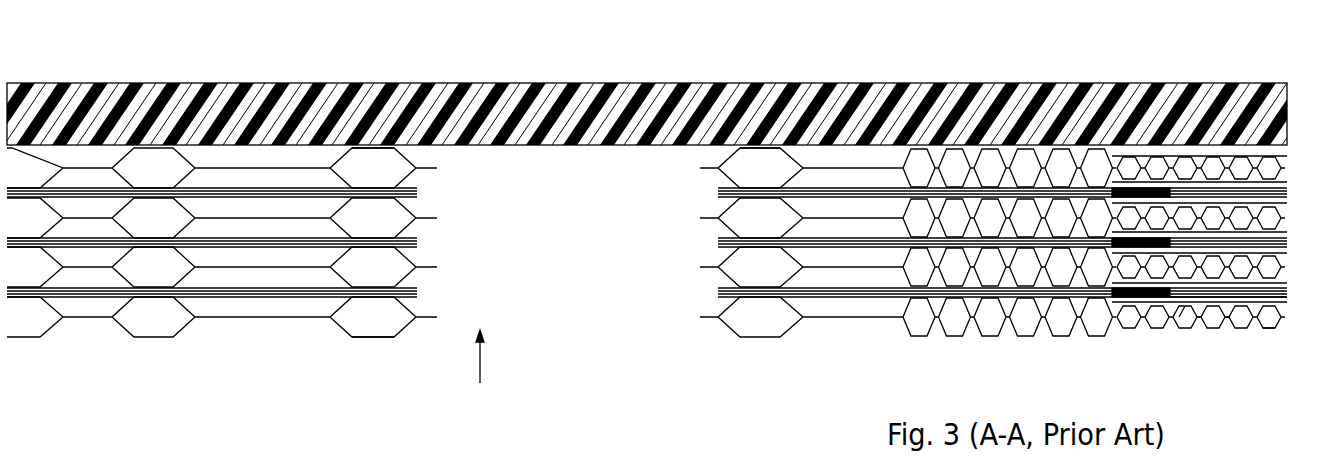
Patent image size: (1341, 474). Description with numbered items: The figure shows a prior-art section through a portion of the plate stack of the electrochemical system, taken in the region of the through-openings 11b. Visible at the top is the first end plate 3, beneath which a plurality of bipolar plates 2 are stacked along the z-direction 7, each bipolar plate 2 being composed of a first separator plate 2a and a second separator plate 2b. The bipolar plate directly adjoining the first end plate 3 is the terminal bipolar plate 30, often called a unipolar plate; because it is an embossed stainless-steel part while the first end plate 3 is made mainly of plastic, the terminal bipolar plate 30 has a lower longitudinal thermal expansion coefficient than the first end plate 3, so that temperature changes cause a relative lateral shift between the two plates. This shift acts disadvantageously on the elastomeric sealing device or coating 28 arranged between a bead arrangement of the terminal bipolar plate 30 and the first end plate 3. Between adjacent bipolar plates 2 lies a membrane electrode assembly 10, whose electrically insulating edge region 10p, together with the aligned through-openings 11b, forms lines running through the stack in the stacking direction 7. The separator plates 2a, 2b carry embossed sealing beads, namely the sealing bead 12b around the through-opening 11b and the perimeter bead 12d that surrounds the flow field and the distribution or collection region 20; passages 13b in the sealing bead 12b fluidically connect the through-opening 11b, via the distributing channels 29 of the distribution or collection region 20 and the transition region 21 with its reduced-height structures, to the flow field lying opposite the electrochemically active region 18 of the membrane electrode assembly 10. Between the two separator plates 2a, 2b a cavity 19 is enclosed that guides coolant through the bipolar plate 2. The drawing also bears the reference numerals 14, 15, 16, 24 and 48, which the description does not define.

The bipolar plate 2 is at (1287, 207).
The first separator plate 2a is at (720, 216).
The second separator plate 2b is at (770, 338).
The first end plate 3 is at (607, 100).
The z-direction 7 is at (482, 350).
The membrane electrode assembly 10 is at (1293, 285).
The electrically insulating edge region of the MEA 10p is at (720, 293).
The through-opening 11b is at (593, 251).
The sealing bead 12b is at (375, 339).
The perimeter bead 12d is at (152, 339).
The passage 13b is at (721, 250).
The outer layer line 14 is at (1277, 293).
The intermediate double layer 15 is at (255, 298).
The hatched joint region 16 is at (1122, 302).
The electrochemically active region 18 is at (1265, 340).
The cavity 19 is at (1188, 318).
The distribution or collection region 20 is at (977, 345).
The transition region 21 is at (1150, 345).
The cell junction 24 is at (1200, 318).
The elastomeric sealing device or coating 28 is at (377, 146).
The distributing channel 29 is at (1228, 319).
The terminal bipolar plate 30 is at (263, 167).
The bottom element 48 is at (628, 469).